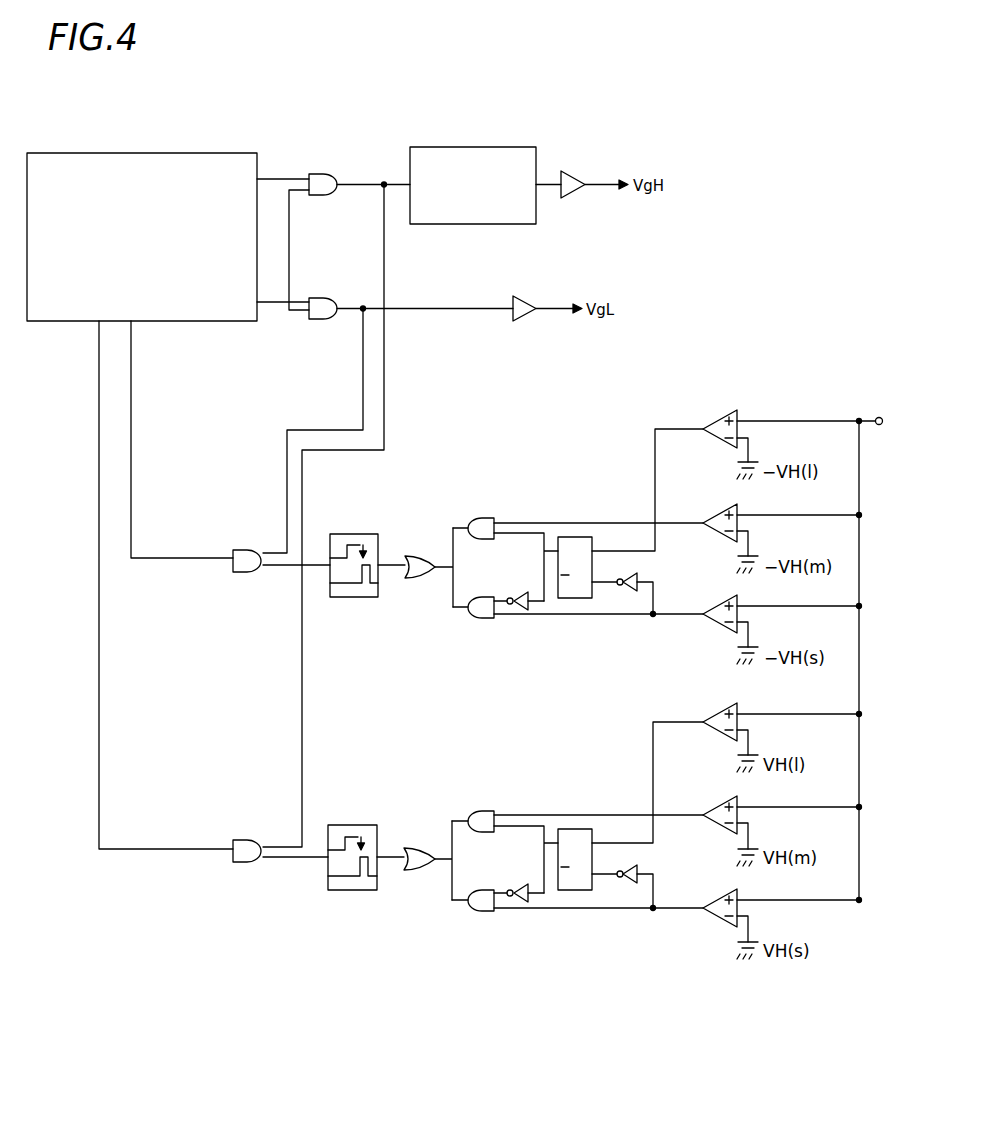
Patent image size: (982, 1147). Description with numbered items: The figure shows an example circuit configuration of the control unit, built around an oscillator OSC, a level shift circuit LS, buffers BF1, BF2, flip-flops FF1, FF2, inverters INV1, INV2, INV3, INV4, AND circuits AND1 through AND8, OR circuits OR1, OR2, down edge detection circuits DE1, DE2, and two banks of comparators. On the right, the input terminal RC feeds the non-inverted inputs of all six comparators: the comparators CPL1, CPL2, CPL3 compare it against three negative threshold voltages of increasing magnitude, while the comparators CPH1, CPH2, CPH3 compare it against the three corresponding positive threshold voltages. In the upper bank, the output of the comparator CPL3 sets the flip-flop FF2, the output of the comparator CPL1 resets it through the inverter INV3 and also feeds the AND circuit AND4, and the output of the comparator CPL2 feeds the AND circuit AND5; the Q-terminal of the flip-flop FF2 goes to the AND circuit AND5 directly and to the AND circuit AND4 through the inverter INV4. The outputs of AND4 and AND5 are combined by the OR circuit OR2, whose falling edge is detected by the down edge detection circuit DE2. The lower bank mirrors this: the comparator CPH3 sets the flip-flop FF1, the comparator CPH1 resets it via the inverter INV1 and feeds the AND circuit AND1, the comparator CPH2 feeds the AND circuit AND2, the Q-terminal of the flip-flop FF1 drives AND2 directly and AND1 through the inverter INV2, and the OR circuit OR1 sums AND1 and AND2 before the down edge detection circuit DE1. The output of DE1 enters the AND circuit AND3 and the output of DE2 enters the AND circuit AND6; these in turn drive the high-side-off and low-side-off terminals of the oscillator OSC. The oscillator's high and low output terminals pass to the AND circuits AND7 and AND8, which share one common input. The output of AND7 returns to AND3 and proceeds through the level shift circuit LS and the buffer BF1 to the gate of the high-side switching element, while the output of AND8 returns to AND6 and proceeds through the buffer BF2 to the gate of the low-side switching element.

The oscillator OSC is at (208, 152).
The AND circuit AND7 is at (323, 173).
The AND circuit AND8 is at (322, 319).
The level shift circuit LS is at (513, 146).
The buffer BF1 is at (573, 171).
The buffer BF2 is at (520, 296).
The AND circuit AND6 is at (248, 549).
The down edge detection circuit DE2 is at (356, 534).
The OR circuit OR2 is at (421, 556).
The AND circuit AND5 is at (483, 518).
The AND circuit AND4 is at (482, 618).
The flip-flop FF2 is at (576, 537).
The inverter INV3 is at (628, 592).
The inverter INV4 is at (524, 608).
The comparator CPL1 is at (711, 600).
The comparator CPL2 is at (711, 511).
The comparator CPL3 is at (714, 416).
The input terminal RC is at (879, 415).
The AND circuit AND3 is at (248, 839).
The down edge detection circuit DE1 is at (353, 825).
The OR circuit OR1 is at (419, 848).
The AND circuit AND2 is at (483, 811).
The AND circuit AND1 is at (482, 911).
The flip-flop FF1 is at (576, 829).
The inverter INV1 is at (628, 884).
The inverter INV2 is at (522, 903).
The comparator CPH1 is at (711, 892).
The comparator CPH2 is at (711, 800).
The comparator CPH3 is at (711, 706).